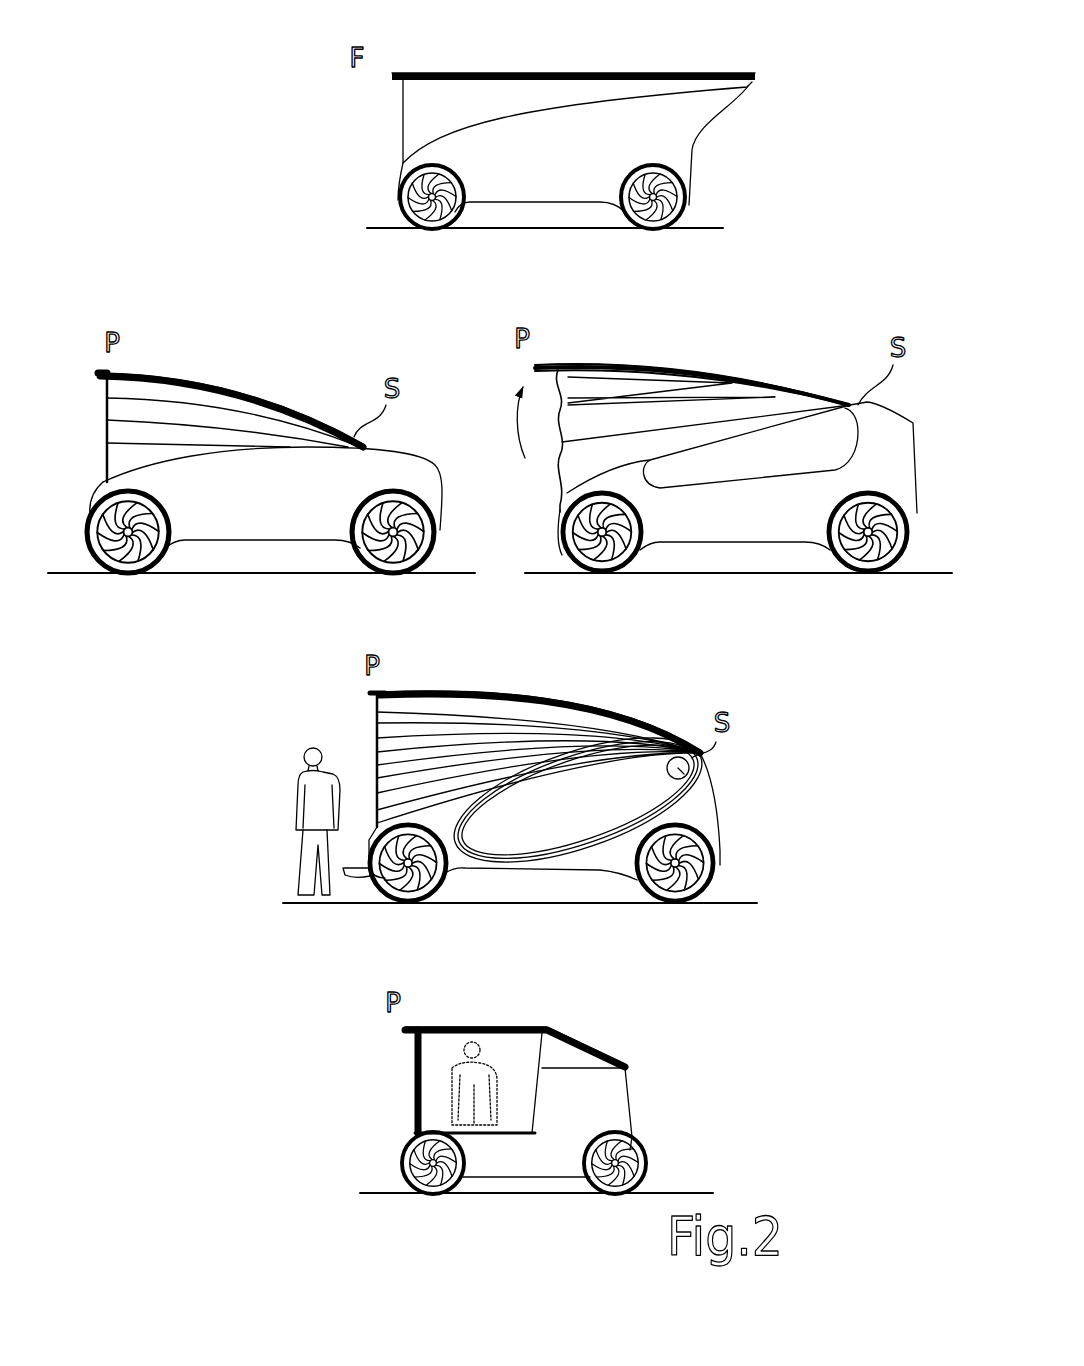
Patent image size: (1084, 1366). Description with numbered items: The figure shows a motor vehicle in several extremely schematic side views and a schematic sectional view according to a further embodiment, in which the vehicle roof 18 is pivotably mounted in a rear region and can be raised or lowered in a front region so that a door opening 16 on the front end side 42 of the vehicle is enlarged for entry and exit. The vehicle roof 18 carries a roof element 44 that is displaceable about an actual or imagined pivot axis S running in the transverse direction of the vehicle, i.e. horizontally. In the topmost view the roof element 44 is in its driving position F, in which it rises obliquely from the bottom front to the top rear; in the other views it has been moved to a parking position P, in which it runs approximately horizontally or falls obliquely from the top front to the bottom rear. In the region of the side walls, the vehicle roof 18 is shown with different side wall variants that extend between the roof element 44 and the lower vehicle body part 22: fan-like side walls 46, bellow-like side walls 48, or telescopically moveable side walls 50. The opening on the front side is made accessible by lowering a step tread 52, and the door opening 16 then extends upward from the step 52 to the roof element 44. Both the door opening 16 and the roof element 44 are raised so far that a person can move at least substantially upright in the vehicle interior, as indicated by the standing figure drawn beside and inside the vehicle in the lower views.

The door opening 16 is at (99, 440).
The vehicle roof 18 is at (430, 66).
The lower vehicle body part 22 is at (535, 183).
The end side 42 is at (360, 155).
The roof element 44 is at (590, 72).
The fan-like side walls 46 is at (195, 420).
The bellow-like side walls 48 is at (703, 407).
The telescopically moveable side walls 50 is at (513, 746).
The step tread 52 is at (358, 877).